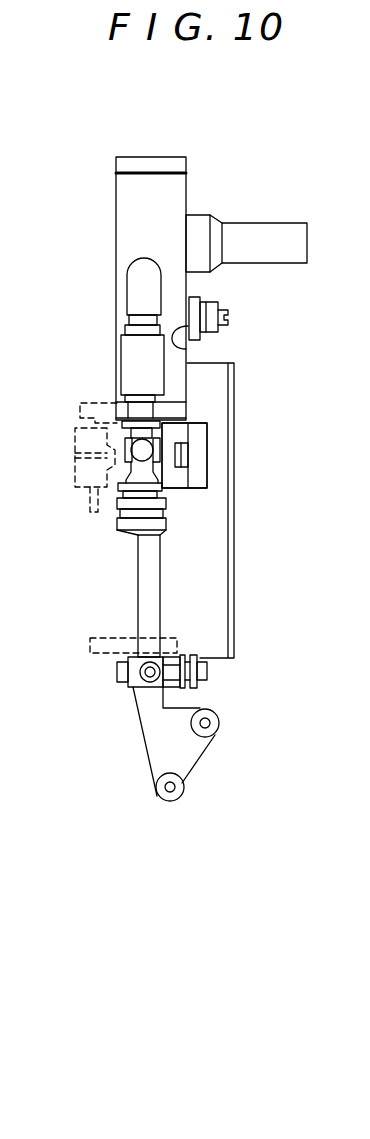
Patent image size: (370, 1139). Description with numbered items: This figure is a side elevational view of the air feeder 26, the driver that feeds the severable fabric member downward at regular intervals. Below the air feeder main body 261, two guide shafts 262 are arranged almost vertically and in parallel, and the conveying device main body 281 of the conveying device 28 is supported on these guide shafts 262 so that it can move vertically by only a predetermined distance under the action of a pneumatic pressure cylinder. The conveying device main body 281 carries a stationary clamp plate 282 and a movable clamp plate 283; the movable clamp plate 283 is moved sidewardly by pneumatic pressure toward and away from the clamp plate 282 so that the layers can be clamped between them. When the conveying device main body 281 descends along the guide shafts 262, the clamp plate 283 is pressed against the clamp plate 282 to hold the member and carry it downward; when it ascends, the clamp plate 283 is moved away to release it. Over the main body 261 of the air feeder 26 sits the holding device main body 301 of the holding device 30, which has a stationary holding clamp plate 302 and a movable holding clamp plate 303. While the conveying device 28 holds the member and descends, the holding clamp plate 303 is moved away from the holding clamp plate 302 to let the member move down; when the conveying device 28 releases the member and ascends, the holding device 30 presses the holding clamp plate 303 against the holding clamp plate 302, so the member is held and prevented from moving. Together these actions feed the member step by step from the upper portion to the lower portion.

The air feeder 26 is at (260, 172).
The air feeder main body 261 is at (133, 221).
The guide shafts 262 is at (138, 582).
The conveying device 28 is at (210, 414).
The conveying device main body 281 is at (178, 483).
The stationary clamp plate 282 is at (198, 467).
The movable clamp plate 283 is at (176, 445).
The holding device 30 is at (252, 303).
The holding device main body 301 is at (218, 330).
The stationary holding clamp plate 302 is at (200, 304).
The movable holding clamp plate 303 is at (186, 349).